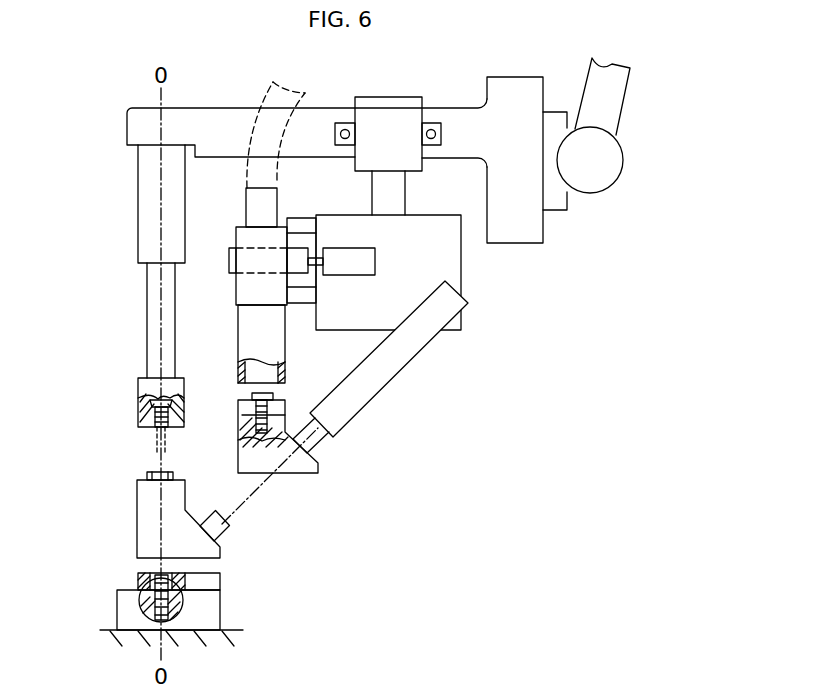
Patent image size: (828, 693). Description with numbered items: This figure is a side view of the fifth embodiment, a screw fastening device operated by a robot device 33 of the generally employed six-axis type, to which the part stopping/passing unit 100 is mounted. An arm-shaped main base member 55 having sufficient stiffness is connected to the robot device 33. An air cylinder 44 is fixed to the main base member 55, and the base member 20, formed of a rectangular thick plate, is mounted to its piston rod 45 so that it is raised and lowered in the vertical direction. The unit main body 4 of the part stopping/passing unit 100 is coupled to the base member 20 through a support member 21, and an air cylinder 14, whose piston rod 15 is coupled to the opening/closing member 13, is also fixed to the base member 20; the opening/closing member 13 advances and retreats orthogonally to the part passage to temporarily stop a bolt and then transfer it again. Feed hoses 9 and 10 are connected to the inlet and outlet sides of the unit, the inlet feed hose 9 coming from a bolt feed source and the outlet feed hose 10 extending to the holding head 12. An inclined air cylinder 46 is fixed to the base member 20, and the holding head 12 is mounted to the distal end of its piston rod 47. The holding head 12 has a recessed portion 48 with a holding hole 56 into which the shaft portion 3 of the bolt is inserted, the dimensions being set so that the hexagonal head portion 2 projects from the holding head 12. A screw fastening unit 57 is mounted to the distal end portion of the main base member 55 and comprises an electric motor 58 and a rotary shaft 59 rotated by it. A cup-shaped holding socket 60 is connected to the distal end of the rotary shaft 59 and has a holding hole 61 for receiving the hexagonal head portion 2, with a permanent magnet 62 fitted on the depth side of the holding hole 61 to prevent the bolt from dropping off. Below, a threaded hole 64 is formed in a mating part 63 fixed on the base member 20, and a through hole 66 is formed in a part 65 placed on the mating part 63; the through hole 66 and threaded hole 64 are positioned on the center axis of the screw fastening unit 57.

The head portion 2 is at (150, 474).
The shaft portion 3 is at (157, 443).
The unit main body 4 is at (236, 298).
The feed hose 9 is at (268, 88).
The feed hose 10 is at (238, 351).
The holding head 12 is at (137, 527).
The opening/closing member 13 is at (229, 265).
The air cylinder 14 is at (375, 262).
The piston rod 15 is at (318, 252).
The base member 20 is at (462, 272).
The support member 21 is at (299, 218).
The robot device 33 is at (635, 158).
The air cylinder 44 is at (390, 105).
The piston rod 45 is at (405, 193).
The air cylinder 46 is at (400, 364).
The piston rod 47 is at (320, 449).
The recessed portion 48 is at (252, 410).
The main base member 55 is at (328, 108).
The holding hole 56 is at (292, 420).
The screw fastening unit 57 is at (123, 256).
The electric motor 58 is at (138, 195).
The rotary shaft 59 is at (147, 296).
The holding socket 60 is at (155, 378).
The holding hole 61 is at (140, 423).
The permanent magnet 62 is at (150, 402).
The mating part 63 is at (220, 612).
The threaded hole 64 is at (150, 602).
The part 65 is at (215, 578).
The through hole 66 is at (145, 578).
The part stopping/passing unit 100 is at (228, 232).